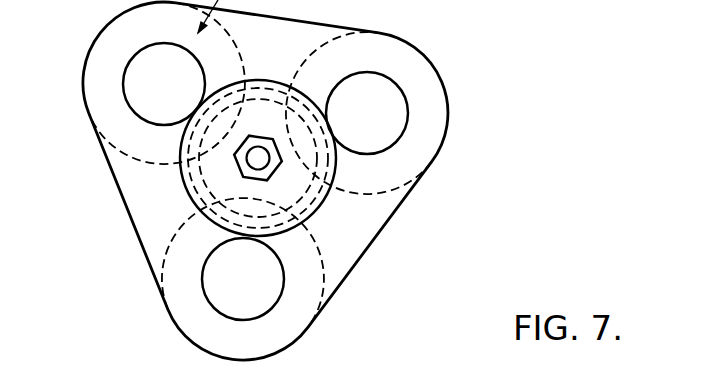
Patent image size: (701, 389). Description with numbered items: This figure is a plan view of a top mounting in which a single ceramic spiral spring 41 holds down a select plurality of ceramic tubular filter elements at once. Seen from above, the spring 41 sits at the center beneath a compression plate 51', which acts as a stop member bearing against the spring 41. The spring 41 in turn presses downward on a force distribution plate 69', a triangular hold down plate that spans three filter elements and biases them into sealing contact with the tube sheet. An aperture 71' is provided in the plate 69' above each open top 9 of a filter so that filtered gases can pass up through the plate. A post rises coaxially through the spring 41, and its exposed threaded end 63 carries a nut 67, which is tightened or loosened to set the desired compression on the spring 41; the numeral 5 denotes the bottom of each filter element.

The bottom 5 is at (173, 94).
The open top 9 is at (370, 88).
The ceramic spiral spring 41 is at (186, 188).
The compression plate 51' is at (313, 162).
The threaded end 63 is at (255, 162).
The nut 67 is at (276, 178).
The force distribution plate 69' is at (240, 181).
The aperture 71' is at (293, 165).